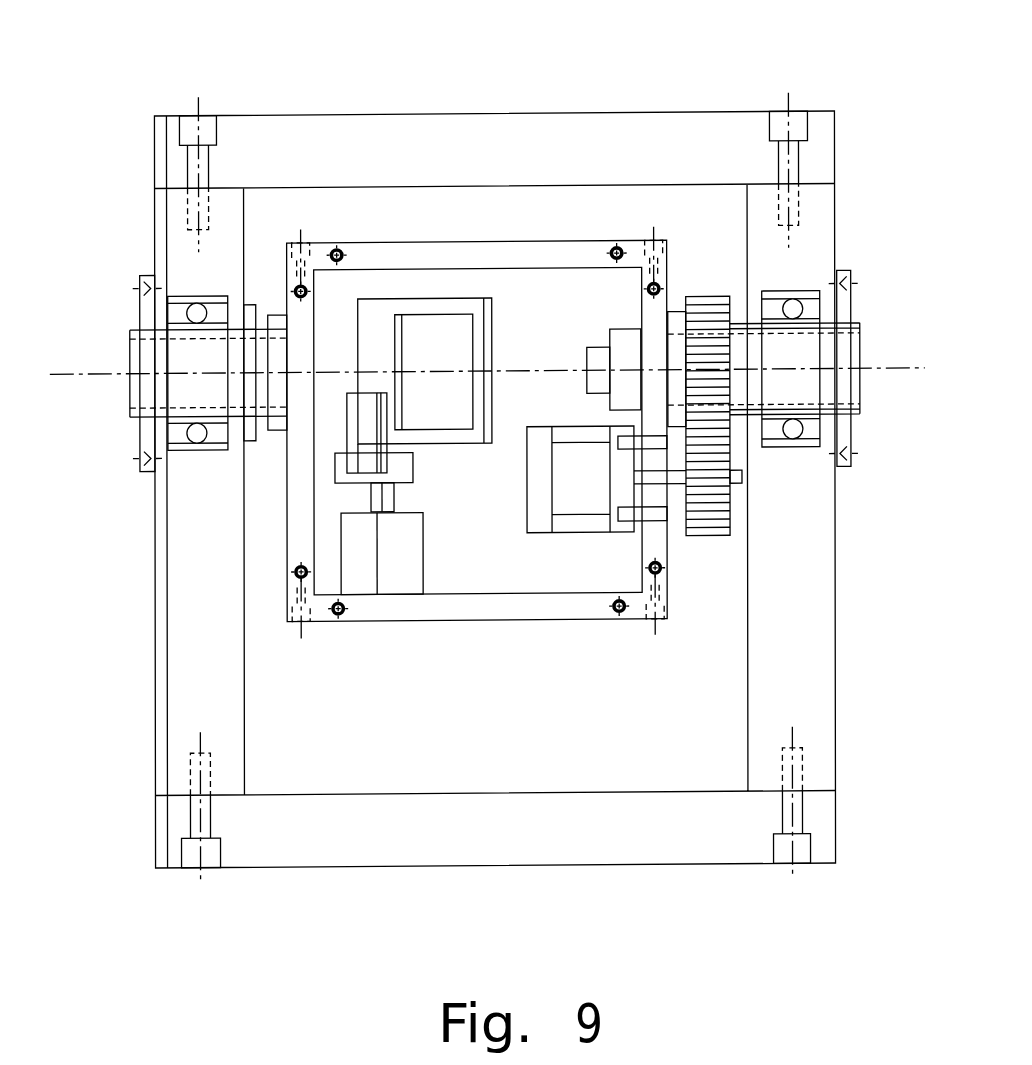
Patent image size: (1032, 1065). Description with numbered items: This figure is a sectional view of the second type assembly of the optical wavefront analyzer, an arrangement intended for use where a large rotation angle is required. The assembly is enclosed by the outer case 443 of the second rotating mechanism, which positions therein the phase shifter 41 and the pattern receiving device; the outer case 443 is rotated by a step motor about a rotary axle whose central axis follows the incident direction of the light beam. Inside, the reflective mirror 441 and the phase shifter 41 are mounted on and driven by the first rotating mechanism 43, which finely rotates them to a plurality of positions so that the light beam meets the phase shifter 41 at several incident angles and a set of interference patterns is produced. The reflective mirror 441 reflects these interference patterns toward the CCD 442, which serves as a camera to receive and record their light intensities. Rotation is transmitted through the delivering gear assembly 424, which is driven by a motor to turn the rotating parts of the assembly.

The outer case 443 is at (310, 152).
The phase shifter 41 is at (415, 298).
The reflective mirror 441 is at (486, 331).
The CCD 442 is at (603, 358).
The delivering gear assembly 424 is at (708, 317).
The first rotating mechanism 43 is at (401, 563).